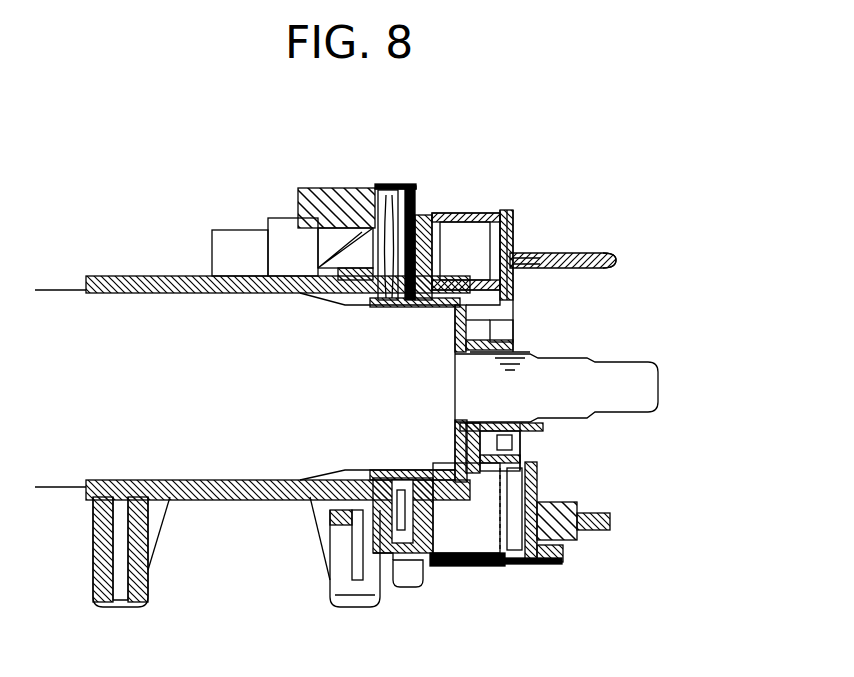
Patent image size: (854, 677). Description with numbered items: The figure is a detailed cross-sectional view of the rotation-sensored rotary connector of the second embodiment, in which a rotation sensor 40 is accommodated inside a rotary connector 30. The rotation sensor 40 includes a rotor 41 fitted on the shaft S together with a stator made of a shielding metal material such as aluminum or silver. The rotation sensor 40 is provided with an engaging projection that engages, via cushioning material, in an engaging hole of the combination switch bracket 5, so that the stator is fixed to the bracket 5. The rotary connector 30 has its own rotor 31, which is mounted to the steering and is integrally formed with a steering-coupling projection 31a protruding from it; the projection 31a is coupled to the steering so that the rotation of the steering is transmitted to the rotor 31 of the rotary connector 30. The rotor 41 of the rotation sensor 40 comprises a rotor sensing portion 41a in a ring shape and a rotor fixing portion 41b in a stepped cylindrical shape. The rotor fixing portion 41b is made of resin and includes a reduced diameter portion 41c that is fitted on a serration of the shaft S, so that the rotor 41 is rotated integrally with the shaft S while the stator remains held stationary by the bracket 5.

The rotation sensor 40 is at (458, 147).
The rotor 41 is at (388, 215).
The rotary connector 30 is at (505, 575).
The rotor 31 is at (513, 228).
The steering-coupling projection 31a is at (568, 272).
The shaft S is at (660, 388).
The rotor fixing portion 41b is at (400, 478).
The reduced diameter portion 41c is at (524, 434).
The rotor sensing portion 41a is at (380, 515).
The combination switch bracket 5 is at (330, 590).